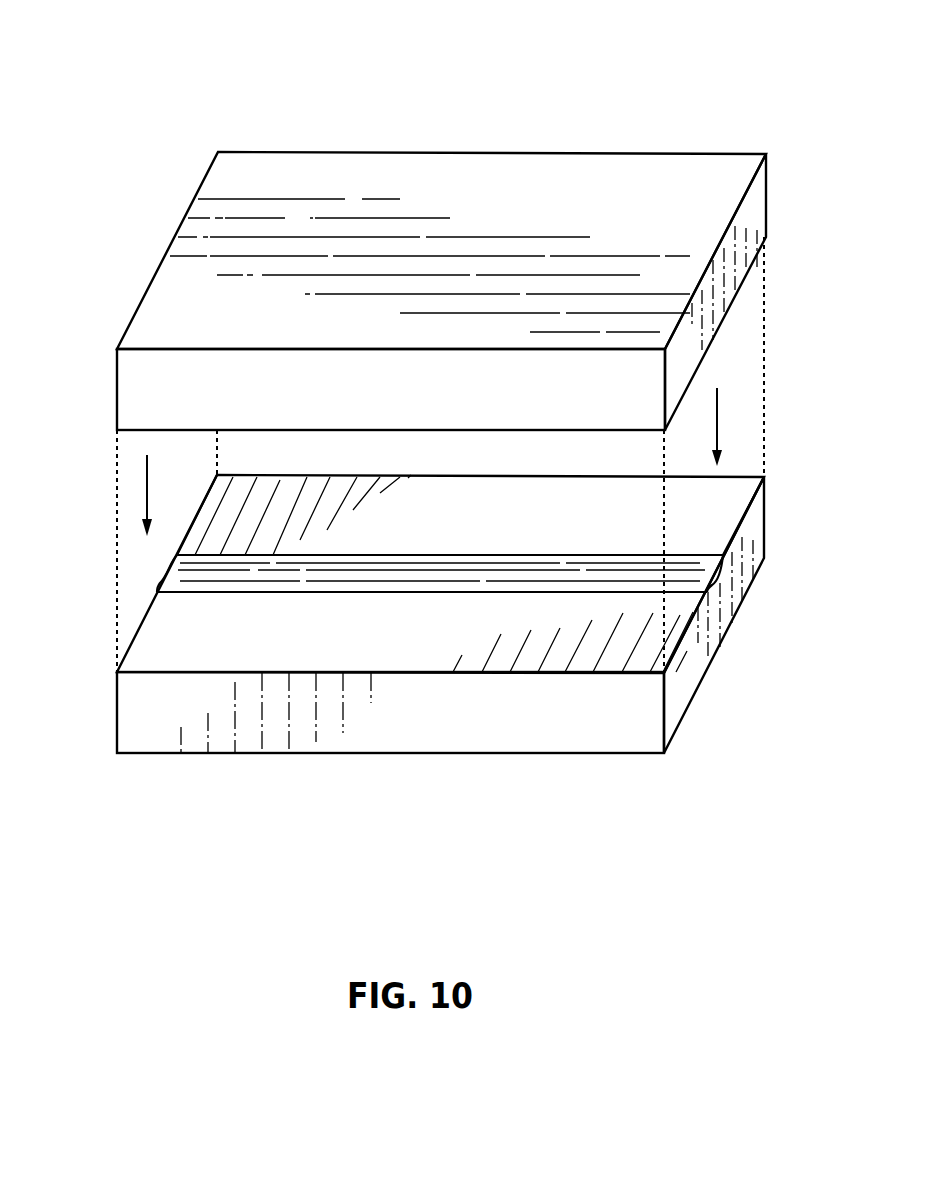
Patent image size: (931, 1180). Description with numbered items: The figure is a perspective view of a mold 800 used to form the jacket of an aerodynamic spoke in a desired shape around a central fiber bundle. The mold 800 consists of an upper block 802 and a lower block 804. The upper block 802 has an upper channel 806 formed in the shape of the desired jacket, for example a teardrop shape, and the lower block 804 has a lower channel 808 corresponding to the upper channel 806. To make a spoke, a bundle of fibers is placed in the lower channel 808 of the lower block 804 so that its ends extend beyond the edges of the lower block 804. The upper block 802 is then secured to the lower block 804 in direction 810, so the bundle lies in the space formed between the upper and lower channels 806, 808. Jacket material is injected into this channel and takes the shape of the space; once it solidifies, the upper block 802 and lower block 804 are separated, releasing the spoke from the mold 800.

The mold 800 is at (282, 86).
The upper block 802 is at (147, 292).
The lower block 804 is at (117, 720).
The upper channel 806 is at (738, 287).
The lower channel 808 is at (707, 592).
The direction 810 is at (147, 497).